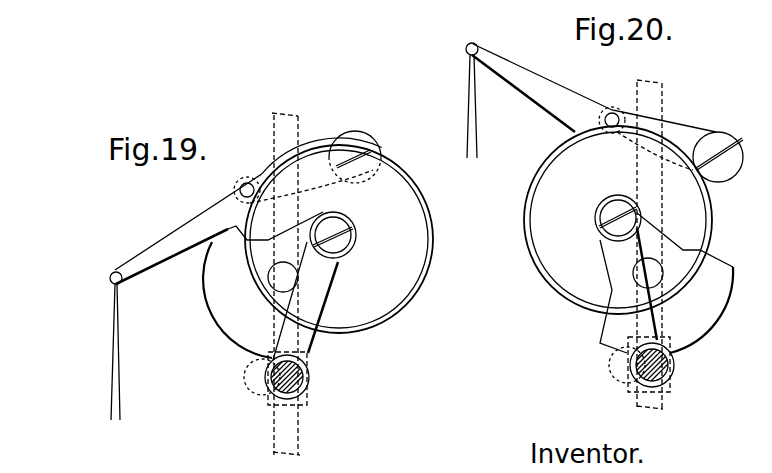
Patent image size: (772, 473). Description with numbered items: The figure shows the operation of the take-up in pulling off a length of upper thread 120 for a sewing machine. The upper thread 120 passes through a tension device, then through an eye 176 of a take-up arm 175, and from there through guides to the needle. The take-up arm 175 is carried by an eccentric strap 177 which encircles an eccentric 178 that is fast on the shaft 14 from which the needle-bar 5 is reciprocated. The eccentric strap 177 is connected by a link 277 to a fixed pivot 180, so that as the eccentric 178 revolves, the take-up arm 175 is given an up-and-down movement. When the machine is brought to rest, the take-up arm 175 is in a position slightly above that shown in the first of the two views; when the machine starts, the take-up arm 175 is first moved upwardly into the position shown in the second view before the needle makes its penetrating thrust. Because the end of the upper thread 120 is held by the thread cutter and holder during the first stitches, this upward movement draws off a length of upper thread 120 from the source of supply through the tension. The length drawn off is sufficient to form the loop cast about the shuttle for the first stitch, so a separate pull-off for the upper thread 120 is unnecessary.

In FIG. 19, the needle-bar 5 is at (292, 433).
In FIG. 20, the needle-bar 5 is at (637, 397).
In FIG. 19, the shaft 14 is at (268, 285).
In FIG. 20, the shaft 14 is at (657, 270).
In FIG. 19, the upper thread 120 is at (112, 349).
In FIG. 20, the upper thread 120 is at (477, 133).
In FIG. 19, the take-up arm 175 is at (167, 240).
In FIG. 20, the take-up arm 175 is at (513, 68).
In FIG. 19, the eye 176 is at (110, 274).
In FIG. 20, the eye 176 is at (466, 50).
In FIG. 19, the eccentric strap 177 is at (388, 318).
In FIG. 20, the eccentric strap 177 is at (538, 175).
In FIG. 19, the eccentric 178 is at (388, 262).
In FIG. 20, the eccentric 178 is at (545, 200).
In FIG. 19, the fixed pivot 180 is at (360, 139).
In FIG. 20, the fixed pivot 180 is at (720, 138).
In FIG. 19, the link 277 is at (331, 140).
In FIG. 20, the link 277 is at (683, 125).